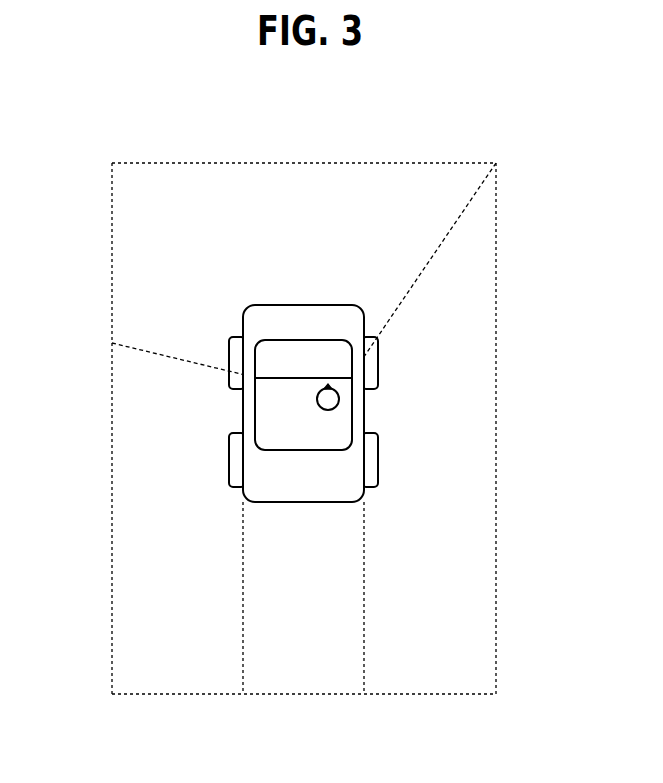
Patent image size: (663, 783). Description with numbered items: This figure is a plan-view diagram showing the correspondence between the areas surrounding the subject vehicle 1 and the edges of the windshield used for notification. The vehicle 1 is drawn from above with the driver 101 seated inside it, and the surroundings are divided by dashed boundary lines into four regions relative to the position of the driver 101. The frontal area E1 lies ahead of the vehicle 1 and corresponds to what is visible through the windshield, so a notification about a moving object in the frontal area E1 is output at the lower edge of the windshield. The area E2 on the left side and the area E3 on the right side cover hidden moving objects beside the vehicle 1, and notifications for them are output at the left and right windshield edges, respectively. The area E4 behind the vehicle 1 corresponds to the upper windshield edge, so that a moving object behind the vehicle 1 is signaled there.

The vehicle 1 is at (336, 305).
The driver 101 is at (340, 400).
The frontal area E1 is at (312, 200).
The area on the left side E2 is at (127, 400).
The area on the right side E3 is at (480, 400).
The area behind the vehicle E4 is at (310, 655).